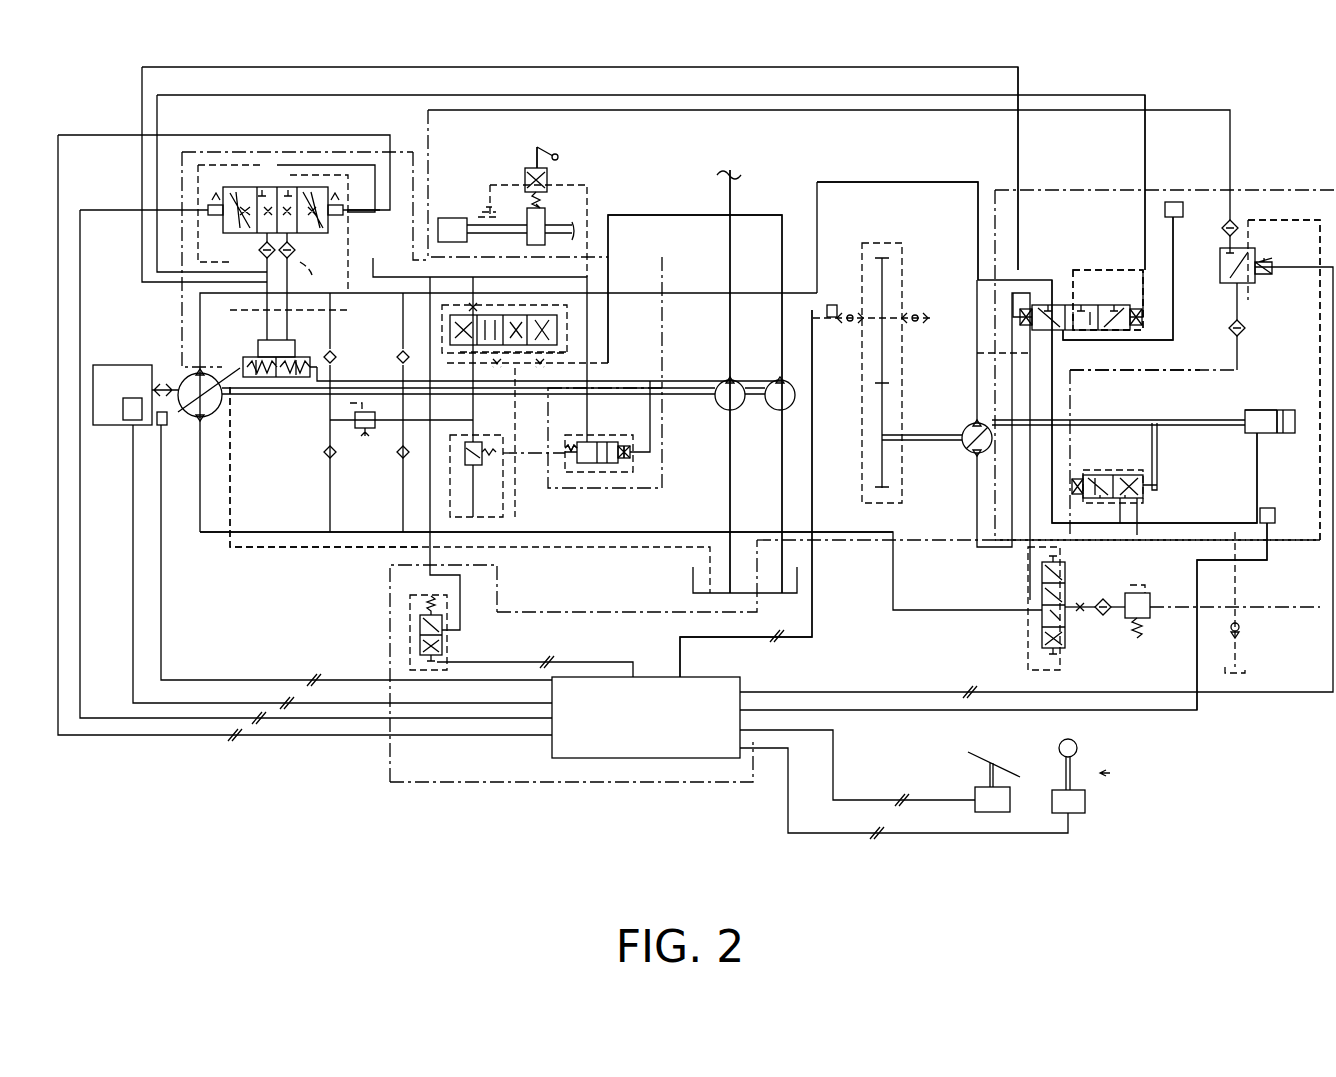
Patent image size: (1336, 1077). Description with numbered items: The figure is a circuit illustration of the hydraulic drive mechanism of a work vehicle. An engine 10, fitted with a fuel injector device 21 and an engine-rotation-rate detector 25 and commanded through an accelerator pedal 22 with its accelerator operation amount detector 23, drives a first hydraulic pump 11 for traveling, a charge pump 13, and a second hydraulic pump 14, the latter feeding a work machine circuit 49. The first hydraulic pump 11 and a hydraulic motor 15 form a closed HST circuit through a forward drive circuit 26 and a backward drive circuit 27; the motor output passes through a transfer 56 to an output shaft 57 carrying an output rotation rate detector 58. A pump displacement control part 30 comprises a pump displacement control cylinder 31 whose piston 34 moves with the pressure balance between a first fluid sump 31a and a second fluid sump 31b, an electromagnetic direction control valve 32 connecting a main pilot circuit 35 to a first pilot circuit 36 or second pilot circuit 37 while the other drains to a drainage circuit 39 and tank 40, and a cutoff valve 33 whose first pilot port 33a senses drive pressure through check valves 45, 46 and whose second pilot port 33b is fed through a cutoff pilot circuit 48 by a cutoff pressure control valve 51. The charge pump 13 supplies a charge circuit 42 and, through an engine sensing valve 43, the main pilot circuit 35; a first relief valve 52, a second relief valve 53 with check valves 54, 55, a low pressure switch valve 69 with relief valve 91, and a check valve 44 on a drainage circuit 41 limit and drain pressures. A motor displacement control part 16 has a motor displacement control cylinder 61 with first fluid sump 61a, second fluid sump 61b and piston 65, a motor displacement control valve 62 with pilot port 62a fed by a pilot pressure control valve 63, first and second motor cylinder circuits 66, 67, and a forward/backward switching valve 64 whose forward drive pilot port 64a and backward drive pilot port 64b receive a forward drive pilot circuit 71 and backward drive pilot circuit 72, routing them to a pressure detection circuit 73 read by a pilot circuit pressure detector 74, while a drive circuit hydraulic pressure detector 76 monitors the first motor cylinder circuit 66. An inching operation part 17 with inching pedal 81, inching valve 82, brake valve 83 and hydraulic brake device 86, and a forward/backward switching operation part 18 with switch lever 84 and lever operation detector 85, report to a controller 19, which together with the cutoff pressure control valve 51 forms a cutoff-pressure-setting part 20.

The engine 10 is at (100, 365).
The first hydraulic pump 11 is at (185, 378).
The charge pump 13 is at (772, 380).
The second hydraulic pump 14 is at (722, 380).
The hydraulic motor 15 is at (965, 425).
The motor displacement control part 16 is at (1295, 190).
The inching operation part 17 is at (572, 156).
The forward/backward switching operation part 18 is at (1110, 773).
The controller 19 is at (612, 758).
The cutoff-pressure-setting part 20 is at (388, 762).
The fuel injector device 21 is at (125, 420).
The accelerator pedal 22 is at (1005, 762).
The accelerator operation amount detector 23 is at (975, 795).
The engine-rotation-rate detector 25 is at (167, 425).
The forward drive circuit 26 is at (205, 534).
The backward drive circuit 27 is at (200, 297).
The pump displacement control part 30 is at (182, 242).
The pump displacement control cylinder 31 is at (283, 378).
The first fluid sump 31a is at (300, 380).
The second fluid sump 31b is at (268, 380).
The electromagnetic direction control valve 32 is at (252, 187).
The cutoff valve 33 is at (635, 470).
The first pilot port 33a is at (622, 465).
The second pilot port 33b is at (568, 473).
The piston 34 is at (245, 360).
The main pilot circuit 35 is at (330, 165).
The first pilot circuit 36 is at (287, 327).
The second pilot circuit 37 is at (267, 327).
The drainage circuit 39 is at (290, 548).
The tank 40 is at (693, 583).
The drainage circuit 41 is at (1237, 573).
The charge circuit 42 is at (685, 213).
The engine sensing valve 43 is at (560, 325).
The check valve 44 is at (1240, 632).
The check valve 45 is at (360, 437).
The check valve 46 is at (333, 355).
The cutoff pilot circuit 48 is at (495, 515).
The work machine circuit 49 is at (728, 238).
The cutoff pressure control valve 51 is at (445, 640).
The first relief valve 52 is at (475, 440).
The second relief valve 53 is at (335, 455).
The check valve 54 is at (400, 458).
The check valve 55 is at (400, 352).
The transfer 56 is at (895, 243).
The output shaft 57 is at (832, 320).
The output rotation rate detector 58 is at (832, 303).
The motor displacement control cylinder 61 is at (1260, 434).
The first fluid sump 61a is at (1250, 410).
The second fluid sump 61b is at (1285, 434).
The motor displacement control valve 62 is at (1145, 490).
The pilot port 62a is at (1078, 477).
The pilot pressure control valve 63 is at (1245, 285).
The forward/backward switching valve 64 is at (1087, 292).
The forward drive pilot port 64a is at (1038, 305).
The backward drive pilot port 64b is at (1120, 305).
The piston 65 is at (1283, 405).
The first motor cylinder circuit 66 is at (1230, 521).
The second motor cylinder circuit 67 is at (1120, 397).
The low pressure switch valve 69 is at (1067, 630).
The forward drive pilot circuit 71 is at (1020, 137).
The backward drive pilot circuit 72 is at (1143, 157).
The pressure detection circuit 73 is at (1175, 305).
The pilot circuit pressure detector 74 is at (1178, 200).
The drive circuit hydraulic pressure detector 76 is at (1277, 517).
The inching pedal 81 is at (535, 152).
The inching valve 82 is at (525, 180).
The brake valve 83 is at (547, 225).
The forward/backward switch lever 84 is at (1075, 758).
The lever operation detector 85 is at (1085, 805).
The hydraulic brake device 86 is at (452, 218).
The relief valve 91 is at (1150, 620).